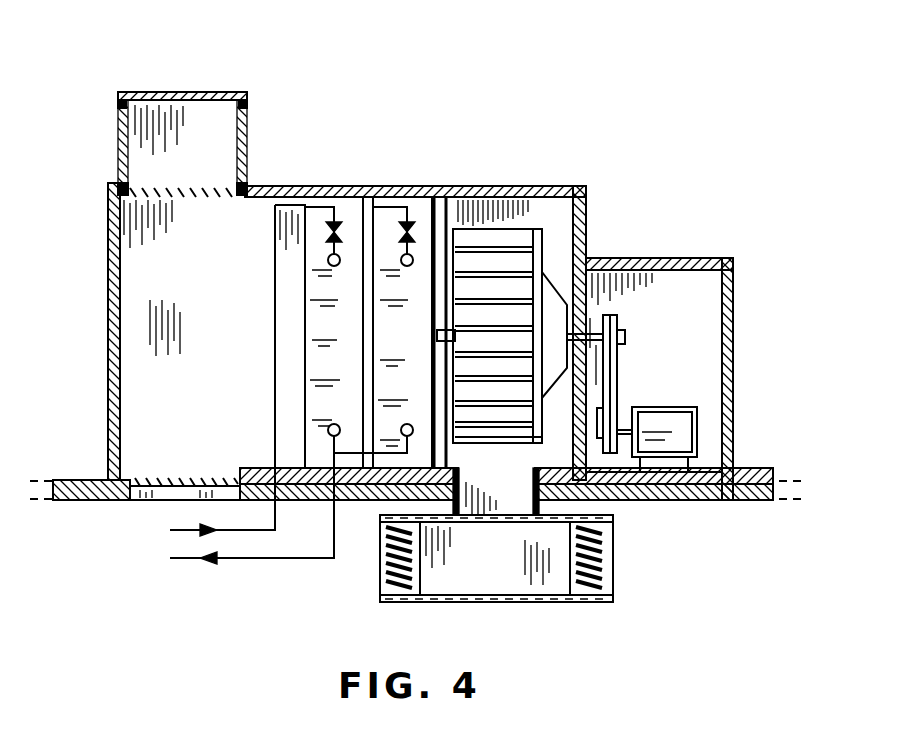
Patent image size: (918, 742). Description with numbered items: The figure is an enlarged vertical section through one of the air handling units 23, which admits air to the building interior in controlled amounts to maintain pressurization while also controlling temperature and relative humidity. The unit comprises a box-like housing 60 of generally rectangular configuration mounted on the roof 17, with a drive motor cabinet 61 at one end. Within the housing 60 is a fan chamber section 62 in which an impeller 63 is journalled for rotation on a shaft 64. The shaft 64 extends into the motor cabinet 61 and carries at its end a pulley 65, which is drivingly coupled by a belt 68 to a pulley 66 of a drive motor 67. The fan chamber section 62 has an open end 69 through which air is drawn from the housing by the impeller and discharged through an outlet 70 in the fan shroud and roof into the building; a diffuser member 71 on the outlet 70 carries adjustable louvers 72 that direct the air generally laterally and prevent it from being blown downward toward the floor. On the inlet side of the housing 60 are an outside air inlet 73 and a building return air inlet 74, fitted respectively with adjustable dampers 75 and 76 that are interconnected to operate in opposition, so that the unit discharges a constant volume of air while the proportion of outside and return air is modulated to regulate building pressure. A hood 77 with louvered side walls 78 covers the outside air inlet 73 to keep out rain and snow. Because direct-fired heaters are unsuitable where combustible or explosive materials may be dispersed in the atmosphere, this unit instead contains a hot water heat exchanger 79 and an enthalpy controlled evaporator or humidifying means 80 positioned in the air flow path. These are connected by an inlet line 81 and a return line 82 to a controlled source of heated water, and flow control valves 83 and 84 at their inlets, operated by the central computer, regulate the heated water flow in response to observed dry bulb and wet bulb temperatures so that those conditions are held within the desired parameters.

The roof 17 is at (760, 482).
The air handling unit 23 is at (607, 145).
The housing 60 is at (385, 186).
The drive motor cabinet 61 is at (695, 258).
The fan chamber section 62 is at (490, 186).
The impeller 63 is at (520, 228).
The shaft 64 is at (597, 315).
The pulley 65 is at (618, 318).
The pulley 66 is at (614, 420).
The drive motor 67 is at (700, 428).
The belt 68 is at (612, 372).
The open end 69 is at (445, 440).
The outlet 70 is at (535, 500).
The diffuser member 71 is at (500, 603).
The adjustable louvers 72 is at (614, 578).
The outside air inlet 73 is at (206, 215).
The building return air inlet 74 is at (210, 452).
The adjustable damper 75 is at (177, 197).
The adjustable damper 76 is at (175, 468).
The hood 77 is at (166, 92).
The louvered side walls 78 is at (118, 140).
The hot water heat exchanger 79 is at (347, 320).
The enthalpy controlled evaporator 80 is at (417, 342).
The inlet line 81 is at (170, 530).
The return line 82 is at (180, 560).
The flow control valve 83 is at (335, 222).
The flow control valve 84 is at (410, 225).